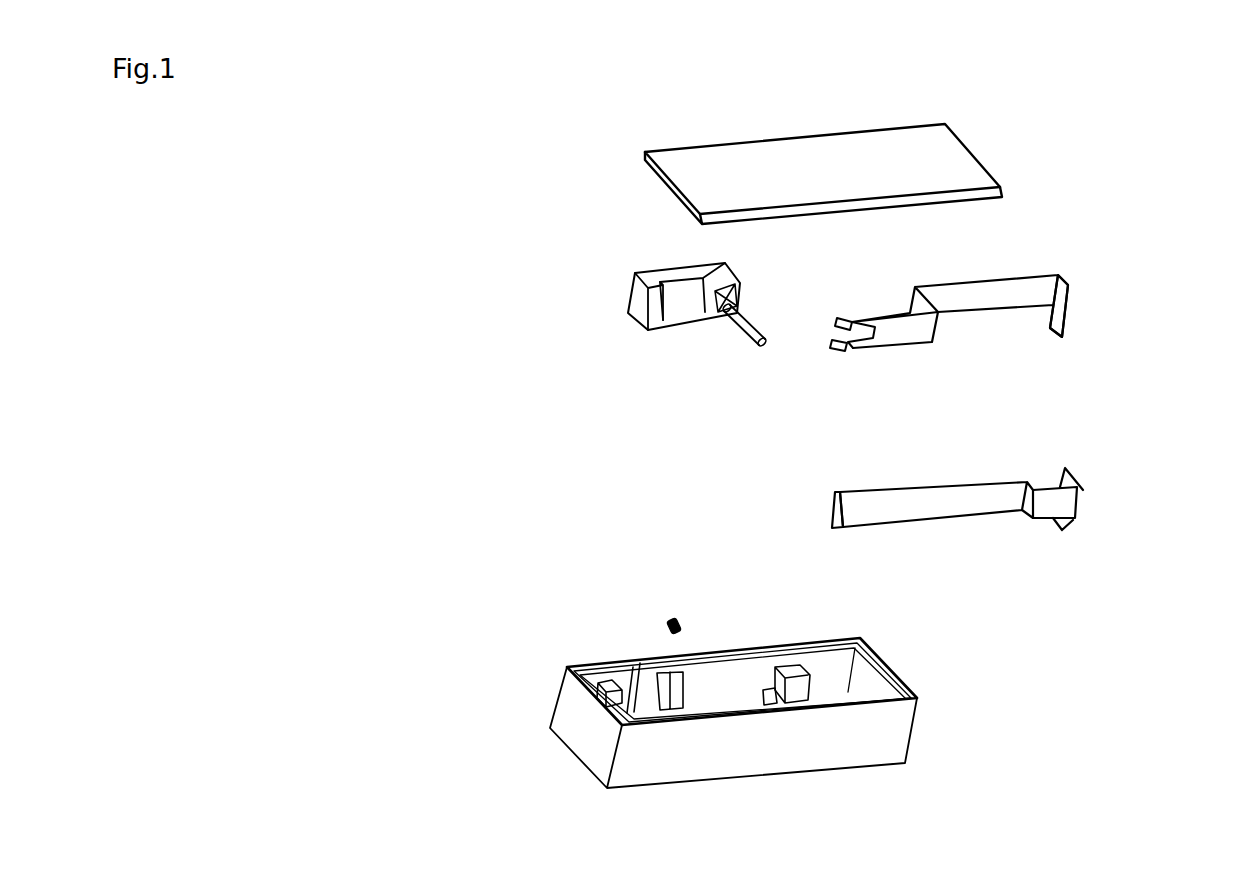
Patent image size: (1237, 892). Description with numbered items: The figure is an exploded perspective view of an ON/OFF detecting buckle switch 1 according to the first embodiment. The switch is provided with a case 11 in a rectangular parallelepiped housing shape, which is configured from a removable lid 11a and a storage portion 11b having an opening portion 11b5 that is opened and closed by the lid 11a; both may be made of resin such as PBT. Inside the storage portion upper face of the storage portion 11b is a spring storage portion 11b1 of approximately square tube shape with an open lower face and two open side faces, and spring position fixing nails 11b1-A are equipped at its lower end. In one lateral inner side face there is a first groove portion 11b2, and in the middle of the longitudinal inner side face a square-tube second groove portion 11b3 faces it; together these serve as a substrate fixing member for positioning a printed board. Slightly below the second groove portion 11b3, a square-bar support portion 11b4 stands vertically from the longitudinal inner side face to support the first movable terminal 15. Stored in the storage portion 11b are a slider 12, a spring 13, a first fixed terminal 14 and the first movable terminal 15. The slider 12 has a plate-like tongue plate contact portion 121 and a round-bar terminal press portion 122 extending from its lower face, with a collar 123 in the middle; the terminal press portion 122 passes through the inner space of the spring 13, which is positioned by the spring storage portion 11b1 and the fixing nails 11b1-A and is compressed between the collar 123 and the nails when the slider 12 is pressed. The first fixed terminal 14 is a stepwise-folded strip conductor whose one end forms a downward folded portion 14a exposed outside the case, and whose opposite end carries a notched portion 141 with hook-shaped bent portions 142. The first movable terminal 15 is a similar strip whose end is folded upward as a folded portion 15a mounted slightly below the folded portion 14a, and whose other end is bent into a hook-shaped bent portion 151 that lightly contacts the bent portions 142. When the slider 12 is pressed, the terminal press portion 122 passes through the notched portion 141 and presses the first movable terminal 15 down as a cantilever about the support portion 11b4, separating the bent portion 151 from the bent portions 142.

The ON/OFF detecting buckle switch 1 is at (1150, 93).
The case 11 is at (387, 193).
The lid 11a is at (645, 160).
The storage portion 11b is at (557, 702).
The spring storage portion 11b1 is at (653, 660).
The spring position fixing nails 11b1-A is at (673, 722).
The first groove portion 11b2 is at (602, 677).
The second groove portion 11b3 is at (806, 663).
The support portion 11b4 is at (765, 678).
The opening portion 11b5 is at (878, 682).
The slider 12 is at (635, 273).
The tongue plate contact portion 121 is at (633, 305).
The terminal press portion 122 is at (762, 343).
The collar 123 is at (732, 322).
The spring 13 is at (670, 614).
The first fixed terminal 14 is at (972, 315).
The folded portion 14a is at (1065, 310).
The notched portion 141 is at (836, 322).
The bent portions 142 is at (843, 352).
The first movable terminal 15 is at (1008, 480).
The folded portion 15a is at (1067, 527).
The bent portion 151 is at (843, 527).